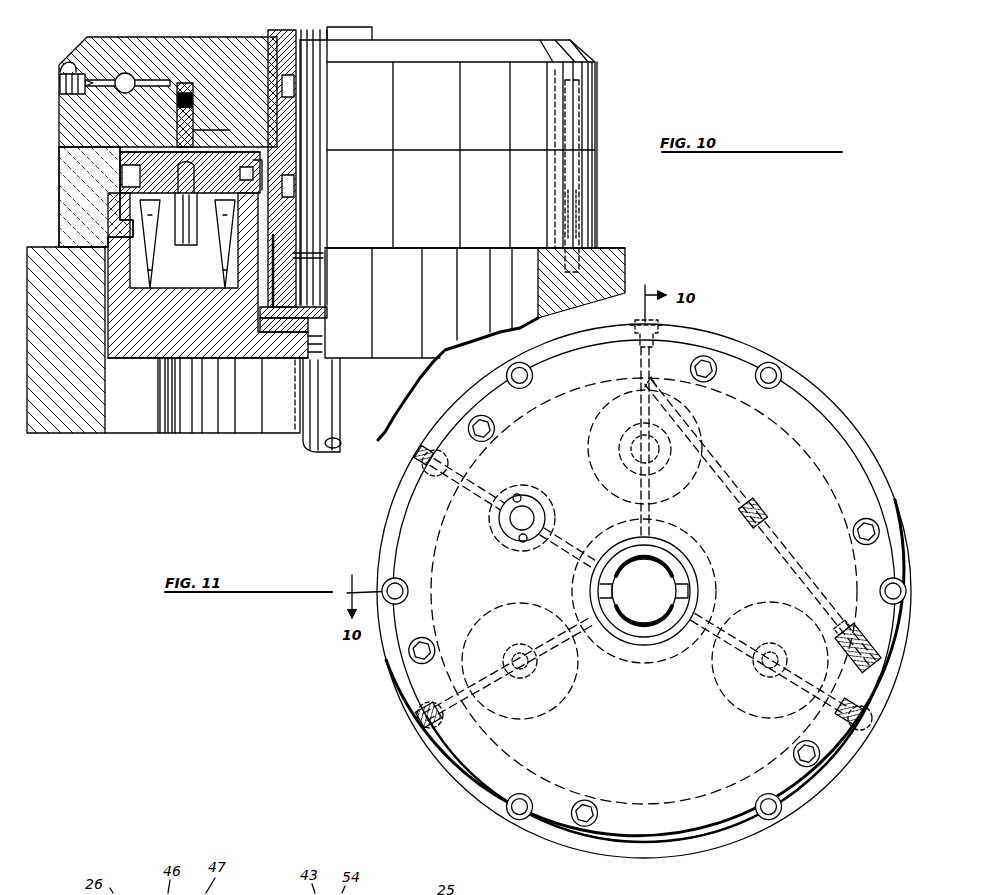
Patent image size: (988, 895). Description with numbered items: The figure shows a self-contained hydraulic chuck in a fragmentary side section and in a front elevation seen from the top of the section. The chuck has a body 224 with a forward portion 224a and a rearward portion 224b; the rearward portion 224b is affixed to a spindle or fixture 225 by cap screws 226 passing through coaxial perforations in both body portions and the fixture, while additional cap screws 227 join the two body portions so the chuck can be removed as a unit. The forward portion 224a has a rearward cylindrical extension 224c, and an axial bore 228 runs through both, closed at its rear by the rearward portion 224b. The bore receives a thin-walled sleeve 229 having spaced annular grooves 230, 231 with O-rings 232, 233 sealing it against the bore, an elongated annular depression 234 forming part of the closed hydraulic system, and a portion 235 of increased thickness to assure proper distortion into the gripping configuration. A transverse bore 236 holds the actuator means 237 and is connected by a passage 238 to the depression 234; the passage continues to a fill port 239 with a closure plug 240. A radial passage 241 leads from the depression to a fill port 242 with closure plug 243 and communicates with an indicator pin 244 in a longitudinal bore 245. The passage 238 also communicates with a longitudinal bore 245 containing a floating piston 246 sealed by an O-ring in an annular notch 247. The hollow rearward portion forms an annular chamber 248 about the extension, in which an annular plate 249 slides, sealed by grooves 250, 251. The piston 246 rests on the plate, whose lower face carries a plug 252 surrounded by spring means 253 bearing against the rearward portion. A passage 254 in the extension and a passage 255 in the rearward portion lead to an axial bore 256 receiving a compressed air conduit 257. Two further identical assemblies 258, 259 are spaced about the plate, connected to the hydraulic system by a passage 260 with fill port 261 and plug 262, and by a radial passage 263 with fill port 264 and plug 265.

In FIG. 10, the body 224 is at (462, 82).
In FIG. 10, the forward portion 224a is at (96, 52).
In FIG. 10, the rearward portion 224b is at (168, 385).
In FIG. 10, the rearward cylindrical extension 224c is at (312, 296).
In FIG. 10, the spindle or fixture 225 is at (75, 433).
In FIG. 10, the cap screws 226 is at (582, 190).
In FIG. 11, the cap screws 226 is at (506, 376).
In FIG. 11, the cap screws 227 is at (468, 427).
In FIG. 10, the axial bore 228 is at (328, 275).
In FIG. 10, the thin-walled sleeve 229 is at (327, 250).
In FIG. 11, the thin-walled sleeve 229 is at (698, 580).
In FIG. 10, the annular groove 230 is at (283, 210).
In FIG. 10, the annular groove 231 is at (290, 82).
In FIG. 10, the O-ring 232 is at (292, 205).
In FIG. 10, the O-ring 233 is at (298, 62).
In FIG. 10, the elongated annular depression 234 is at (312, 104).
In FIG. 10, the portion of increased thickness 235 is at (305, 134).
In FIG. 10, the transverse bore 236 is at (124, 72).
In FIG. 11, the transverse bore 236 is at (738, 486).
In FIG. 11, the actuator means 237 is at (875, 658).
In FIG. 10, the passage 238 is at (185, 82).
In FIG. 11, the passage 238 is at (655, 516).
In FIG. 10, the fill port 239 is at (58, 64).
In FIG. 11, the fill port 239 is at (670, 330).
In FIG. 10, the closure plug 240 is at (60, 88).
In FIG. 11, the closure plug 240 is at (636, 346).
In FIG. 11, the radial passage 241 is at (548, 560).
In FIG. 11, the fill port 242 is at (410, 476).
In FIG. 11, the closure plug 243 is at (418, 455).
In FIG. 11, the indicator pin 244 is at (535, 518).
In FIG. 10, the longitudinal bore 245 is at (195, 139).
In FIG. 11, the longitudinal bore 245 is at (522, 546).
In FIG. 10, the floating piston 246 is at (177, 120).
In FIG. 11, the floating piston 246 is at (636, 457).
In FIG. 10, the annular notch 247 is at (193, 101).
In FIG. 10, the annular chamber 248 is at (135, 240).
In FIG. 10, the annular plate 249 is at (160, 170).
In FIG. 11, the annular plate 249 is at (805, 383).
In FIG. 10, the annular groove 250 is at (235, 175).
In FIG. 10, the annular groove 251 is at (190, 172).
In FIG. 10, the plug or extension 252 is at (184, 246).
In FIG. 11, the plug or extension 252 is at (618, 443).
In FIG. 10, the spring means 253 is at (143, 243).
In FIG. 11, the spring means 253 is at (592, 412).
In FIG. 10, the passage 254 is at (225, 345).
In FIG. 10, the passage 255 is at (282, 340).
In FIG. 10, the axial bore 256 is at (298, 358).
In FIG. 10, the compressed air conduit 257 is at (340, 386).
In FIG. 11, the piston, plug and spring assembly 258 is at (578, 676).
In FIG. 11, the piston, plug and spring assembly 259 is at (742, 718).
In FIG. 11, the passage 260 is at (495, 696).
In FIG. 11, the fill port 261 is at (412, 708).
In FIG. 11, the closure plug 262 is at (418, 730).
In FIG. 11, the radial passage 263 is at (735, 636).
In FIG. 11, the fill port 264 is at (858, 755).
In FIG. 11, the closure plug 265 is at (870, 728).